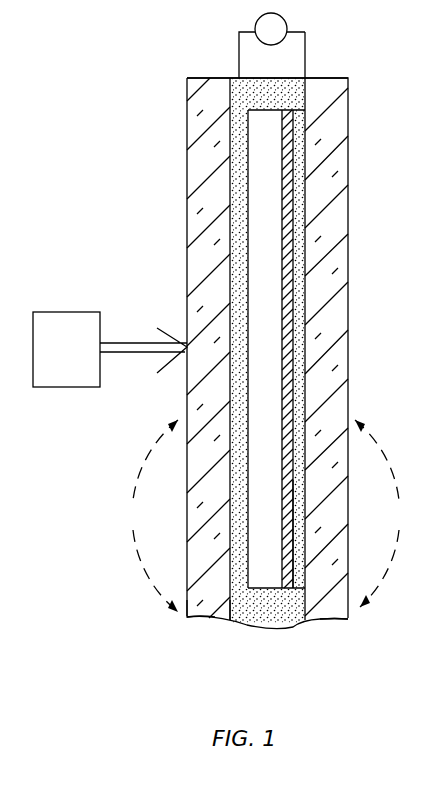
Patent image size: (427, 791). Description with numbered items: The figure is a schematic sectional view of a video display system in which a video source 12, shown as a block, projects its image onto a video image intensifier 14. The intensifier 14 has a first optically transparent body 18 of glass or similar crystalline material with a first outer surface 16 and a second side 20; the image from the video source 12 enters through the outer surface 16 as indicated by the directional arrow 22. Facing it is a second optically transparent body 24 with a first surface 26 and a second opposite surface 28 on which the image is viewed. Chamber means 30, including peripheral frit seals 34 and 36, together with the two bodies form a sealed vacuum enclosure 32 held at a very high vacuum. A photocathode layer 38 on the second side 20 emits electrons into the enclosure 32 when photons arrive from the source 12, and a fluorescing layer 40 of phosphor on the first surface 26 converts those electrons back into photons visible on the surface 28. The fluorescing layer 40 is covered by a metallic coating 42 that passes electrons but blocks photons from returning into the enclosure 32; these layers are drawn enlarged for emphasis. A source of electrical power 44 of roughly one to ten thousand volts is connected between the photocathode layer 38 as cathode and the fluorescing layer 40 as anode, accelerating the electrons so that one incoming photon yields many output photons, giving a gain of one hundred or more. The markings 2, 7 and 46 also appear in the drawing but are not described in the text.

The viewing angle 2 is at (257, 516).
The light direction 7 is at (366, 205).
The video source 12 is at (68, 306).
The video image intensifier 14 is at (358, 268).
The first outer surface 16 is at (185, 167).
The first optically transparent body 18 is at (178, 617).
The second side 20 is at (239, 622).
The directional arrow 22 is at (140, 352).
The second optically transparent body 24 is at (359, 88).
The first surface 26 is at (300, 505).
The second opposite surface 28 is at (348, 318).
The chamber means 30 is at (332, 623).
The vacuum enclosure 32 is at (272, 165).
The frit seal 34 is at (287, 618).
The frit seal 36 is at (258, 98).
The photocathode layer 38 is at (243, 268).
The fluorescing layer 40 is at (305, 183).
The metallic coating 42 is at (292, 252).
The source of electrical power 44 is at (289, 14).
The element 46 is at (419, 399).